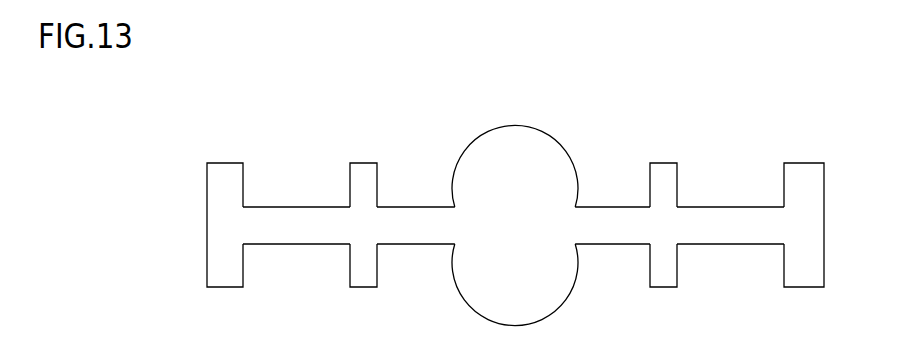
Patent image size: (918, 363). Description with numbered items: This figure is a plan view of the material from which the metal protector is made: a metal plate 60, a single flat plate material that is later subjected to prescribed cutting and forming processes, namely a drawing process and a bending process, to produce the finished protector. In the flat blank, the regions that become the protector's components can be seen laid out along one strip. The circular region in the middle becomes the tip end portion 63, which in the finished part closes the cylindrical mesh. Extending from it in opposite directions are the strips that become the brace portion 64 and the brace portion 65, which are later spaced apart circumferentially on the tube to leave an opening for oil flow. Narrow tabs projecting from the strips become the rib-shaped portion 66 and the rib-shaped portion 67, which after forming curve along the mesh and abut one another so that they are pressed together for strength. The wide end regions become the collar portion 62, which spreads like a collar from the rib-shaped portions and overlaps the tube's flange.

The metal plate 60 is at (224, 143).
The collar portion 62 is at (226, 273).
The tip end portion 63 is at (517, 274).
The brace portion 64 is at (728, 222).
The brace portion 65 is at (412, 222).
The rib-shaped portion 66 is at (664, 273).
The rib-shaped portion 67 is at (365, 273).